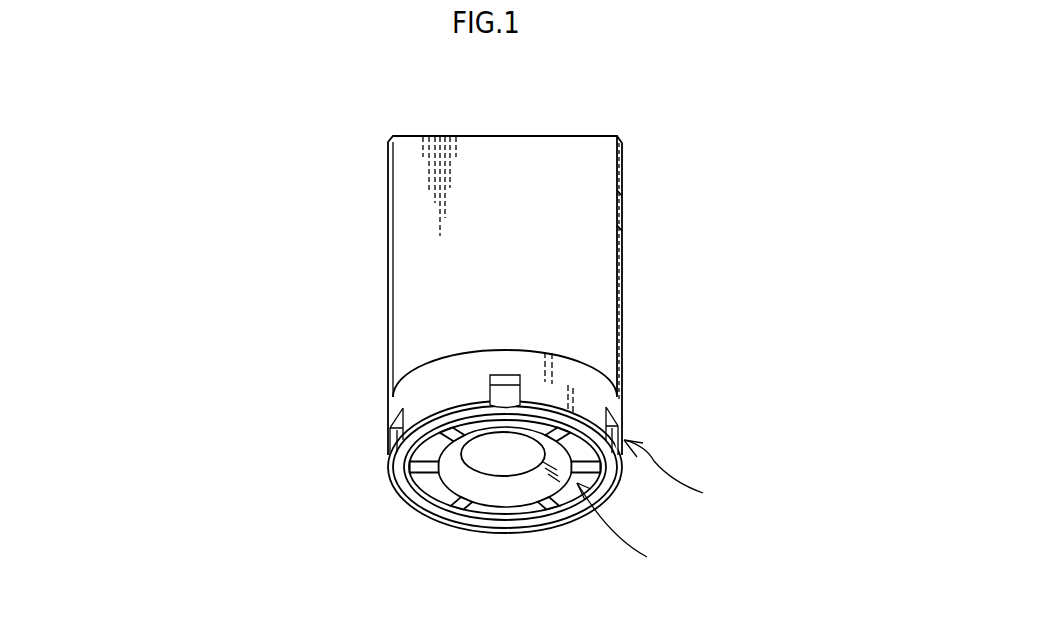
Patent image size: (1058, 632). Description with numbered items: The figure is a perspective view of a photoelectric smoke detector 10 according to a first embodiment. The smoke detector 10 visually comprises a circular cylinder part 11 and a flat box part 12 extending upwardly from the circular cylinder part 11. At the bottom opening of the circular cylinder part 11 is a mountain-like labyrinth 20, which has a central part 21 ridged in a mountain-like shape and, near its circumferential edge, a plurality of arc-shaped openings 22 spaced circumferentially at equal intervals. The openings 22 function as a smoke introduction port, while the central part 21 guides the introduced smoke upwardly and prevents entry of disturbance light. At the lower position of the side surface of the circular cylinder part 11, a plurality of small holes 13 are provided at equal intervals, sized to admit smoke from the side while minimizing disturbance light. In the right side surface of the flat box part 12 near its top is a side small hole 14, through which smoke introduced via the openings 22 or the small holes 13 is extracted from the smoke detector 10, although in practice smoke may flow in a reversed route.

The smoke detector 10 is at (315, 108).
The circular cylinder part 11 is at (432, 390).
The flat box part 12 is at (416, 233).
The small holes 13 is at (608, 434).
The side small hole 14 is at (622, 213).
The mountain-like labyrinth 20 is at (460, 472).
The central part 21 is at (497, 455).
The arc-shaped openings 22 is at (576, 486).